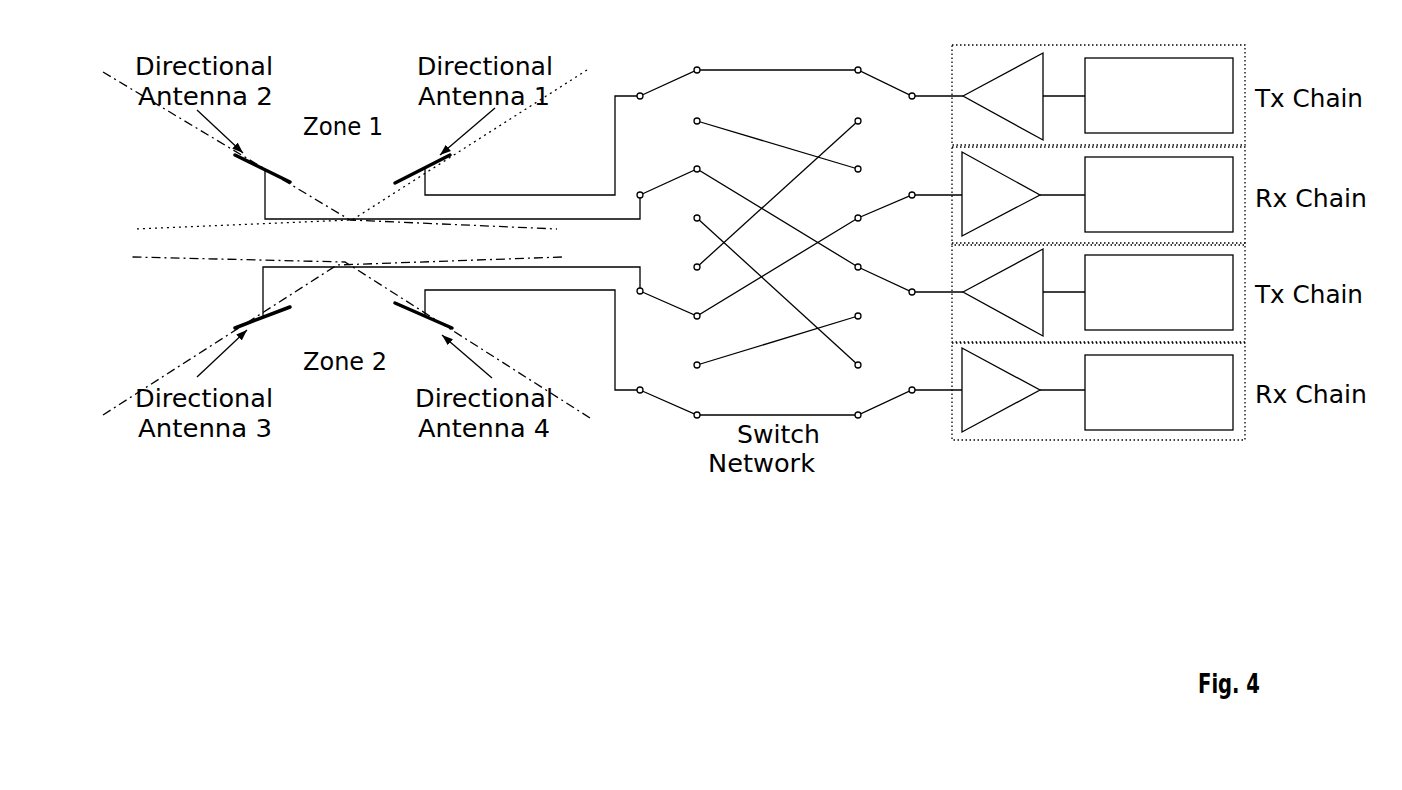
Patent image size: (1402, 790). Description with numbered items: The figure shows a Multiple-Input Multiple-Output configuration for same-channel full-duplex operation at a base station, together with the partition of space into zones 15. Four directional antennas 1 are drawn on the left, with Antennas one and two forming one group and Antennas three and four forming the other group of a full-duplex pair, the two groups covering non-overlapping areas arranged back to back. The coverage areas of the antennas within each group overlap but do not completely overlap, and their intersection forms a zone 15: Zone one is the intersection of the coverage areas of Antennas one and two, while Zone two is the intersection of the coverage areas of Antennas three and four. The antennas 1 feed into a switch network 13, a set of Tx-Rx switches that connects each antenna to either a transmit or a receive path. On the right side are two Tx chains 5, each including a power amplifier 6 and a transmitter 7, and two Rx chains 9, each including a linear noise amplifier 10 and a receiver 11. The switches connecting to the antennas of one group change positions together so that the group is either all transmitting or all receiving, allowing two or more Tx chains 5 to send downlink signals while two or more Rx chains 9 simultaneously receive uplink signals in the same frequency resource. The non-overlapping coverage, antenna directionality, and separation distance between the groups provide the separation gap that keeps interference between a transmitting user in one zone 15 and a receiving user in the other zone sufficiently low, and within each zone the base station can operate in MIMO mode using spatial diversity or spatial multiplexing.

The directional antennas 1 is at (418, 243).
The Tx chain 5 is at (1134, 193).
The power amplifier (PA) 6 is at (1024, 194).
The transmitter 7 is at (1159, 194).
The Rx chain 9 is at (1134, 293).
The linear noise amplifier (LNA) 10 is at (1023, 295).
The receiver 11 is at (1159, 293).
The switch network 13 is at (800, 272).
The zones 15 is at (347, 243).